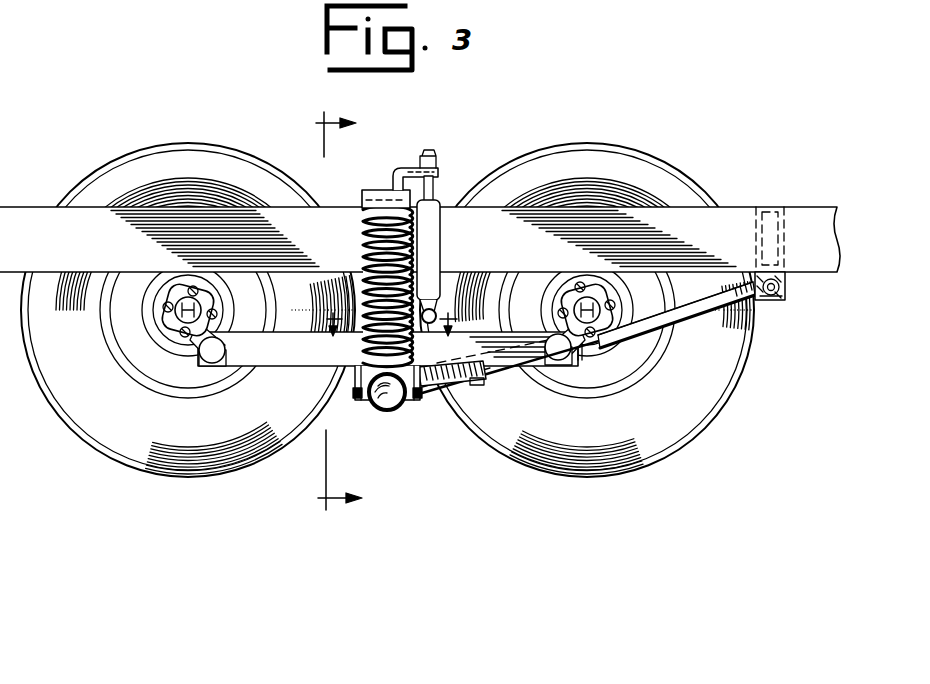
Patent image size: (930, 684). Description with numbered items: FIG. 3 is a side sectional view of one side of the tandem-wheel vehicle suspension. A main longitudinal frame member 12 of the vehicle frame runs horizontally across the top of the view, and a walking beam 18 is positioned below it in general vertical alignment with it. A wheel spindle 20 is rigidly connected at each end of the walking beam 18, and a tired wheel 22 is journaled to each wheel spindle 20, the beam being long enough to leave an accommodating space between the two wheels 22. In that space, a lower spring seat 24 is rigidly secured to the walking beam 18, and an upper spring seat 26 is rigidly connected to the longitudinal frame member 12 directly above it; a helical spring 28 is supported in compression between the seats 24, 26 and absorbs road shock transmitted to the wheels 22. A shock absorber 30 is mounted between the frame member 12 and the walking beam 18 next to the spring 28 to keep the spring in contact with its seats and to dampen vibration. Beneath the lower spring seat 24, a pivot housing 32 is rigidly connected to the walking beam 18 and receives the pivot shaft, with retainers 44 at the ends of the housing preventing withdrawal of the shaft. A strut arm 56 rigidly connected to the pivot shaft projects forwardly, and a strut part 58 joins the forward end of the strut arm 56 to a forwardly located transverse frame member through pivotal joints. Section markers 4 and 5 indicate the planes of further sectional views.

The longitudinal frame member 12 is at (739, 213).
The walking beam 18 is at (273, 367).
The wheel spindle 20 is at (186, 323).
The tired wheel 22 is at (206, 477).
The lower spring seat 24 is at (355, 371).
The upper spring seat 26 is at (371, 191).
The helical spring 28 is at (364, 230).
The shock absorber 30 is at (440, 236).
The pivot housing 32 is at (426, 394).
The retainer 44 is at (385, 410).
The strut arm 56 is at (443, 403).
The strut part 58 is at (695, 316).
The section line 4- 4 is at (356, 313).
The section line 5- 5 is at (398, 340).